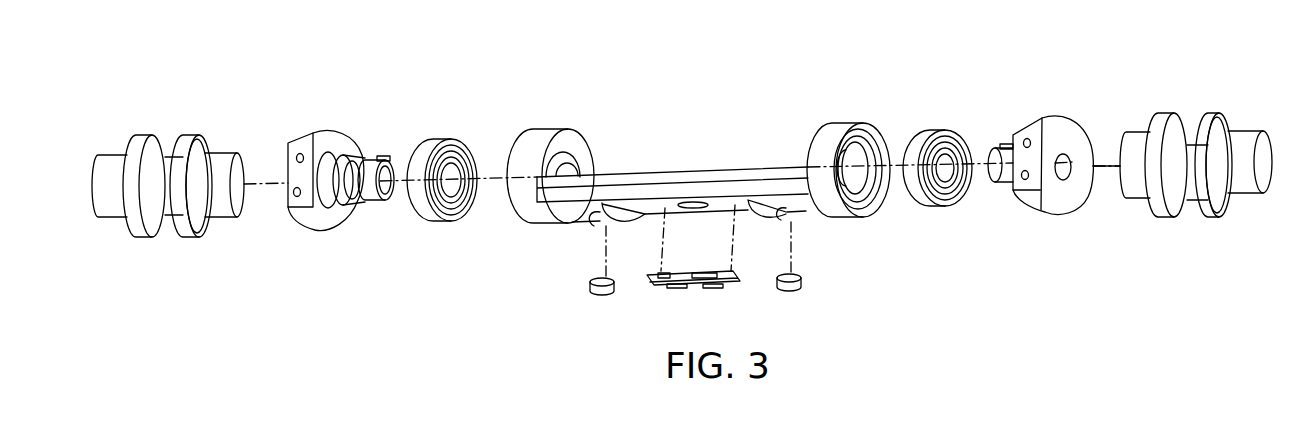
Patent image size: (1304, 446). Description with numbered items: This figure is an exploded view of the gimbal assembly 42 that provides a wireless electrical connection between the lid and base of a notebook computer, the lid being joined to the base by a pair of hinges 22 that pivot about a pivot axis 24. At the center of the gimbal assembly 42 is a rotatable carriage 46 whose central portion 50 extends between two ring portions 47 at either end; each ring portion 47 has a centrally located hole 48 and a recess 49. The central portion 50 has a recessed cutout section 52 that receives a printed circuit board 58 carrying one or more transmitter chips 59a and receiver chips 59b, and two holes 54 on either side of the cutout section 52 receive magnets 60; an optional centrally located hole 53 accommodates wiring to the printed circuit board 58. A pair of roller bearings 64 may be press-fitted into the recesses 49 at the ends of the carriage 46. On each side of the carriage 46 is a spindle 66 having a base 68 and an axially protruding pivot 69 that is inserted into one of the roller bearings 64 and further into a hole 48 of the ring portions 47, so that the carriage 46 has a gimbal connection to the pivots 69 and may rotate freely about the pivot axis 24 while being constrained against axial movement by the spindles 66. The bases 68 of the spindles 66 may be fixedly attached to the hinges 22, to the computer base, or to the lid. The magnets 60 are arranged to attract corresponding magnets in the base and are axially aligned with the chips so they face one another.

The hinges 22 is at (183, 135).
The pivot axis 24 is at (1103, 160).
The gimbal assembly 42 is at (1092, 68).
The rotatable carriage 46 is at (747, 152).
The ring portions 47 is at (522, 147).
The hole 48 is at (567, 168).
The recess 49 is at (873, 197).
The central portion 50 is at (653, 177).
The recessed cutout section 52 is at (653, 210).
The centrally located hole 53 is at (690, 200).
The holes 54 is at (593, 218).
The printed circuit board 58 is at (730, 278).
The transmitter chips 59a is at (672, 287).
The receiver chips 59b is at (710, 287).
The magnets 60 is at (602, 292).
The roller bearings 64 is at (422, 202).
The spindle 66 is at (323, 244).
The base 68 is at (335, 142).
The axially protruding pivot 69 is at (363, 168).